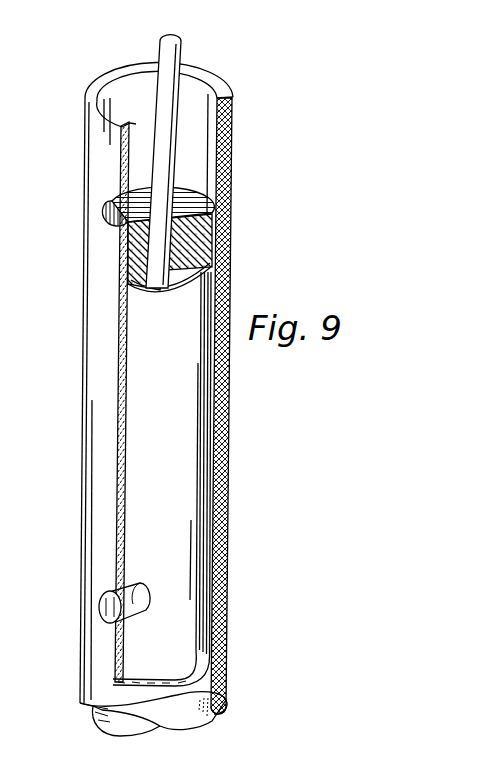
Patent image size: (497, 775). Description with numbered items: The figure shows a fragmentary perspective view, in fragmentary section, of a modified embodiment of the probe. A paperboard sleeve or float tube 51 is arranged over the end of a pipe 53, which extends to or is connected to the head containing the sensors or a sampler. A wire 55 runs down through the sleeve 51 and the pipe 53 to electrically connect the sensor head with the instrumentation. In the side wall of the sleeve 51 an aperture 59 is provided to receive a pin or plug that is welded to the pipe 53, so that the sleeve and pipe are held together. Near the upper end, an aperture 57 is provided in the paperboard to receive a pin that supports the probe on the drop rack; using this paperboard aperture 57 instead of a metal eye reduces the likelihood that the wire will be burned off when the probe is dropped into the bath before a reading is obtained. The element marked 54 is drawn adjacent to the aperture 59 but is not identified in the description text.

The outer tube 51 is at (232, 432).
The inner tube 53 is at (185, 583).
The rod 55 is at (183, 48).
The plug 57 is at (105, 204).
The pin boss 59 is at (118, 571).
The pin 54 is at (104, 609).